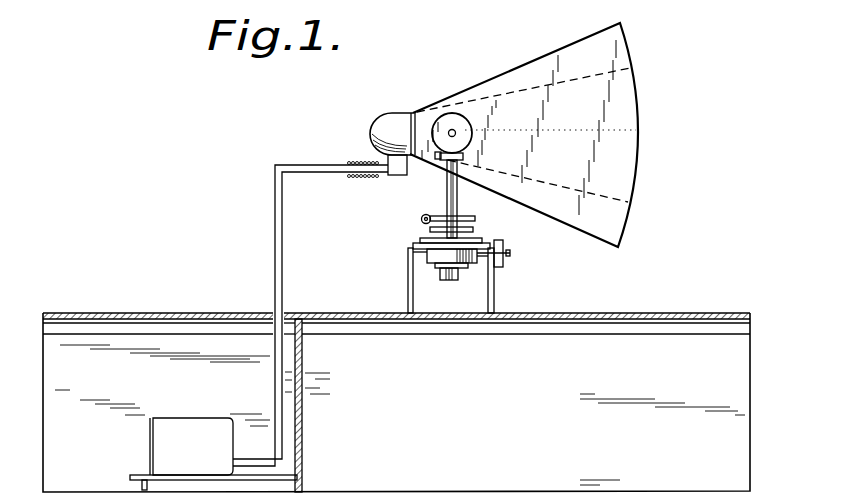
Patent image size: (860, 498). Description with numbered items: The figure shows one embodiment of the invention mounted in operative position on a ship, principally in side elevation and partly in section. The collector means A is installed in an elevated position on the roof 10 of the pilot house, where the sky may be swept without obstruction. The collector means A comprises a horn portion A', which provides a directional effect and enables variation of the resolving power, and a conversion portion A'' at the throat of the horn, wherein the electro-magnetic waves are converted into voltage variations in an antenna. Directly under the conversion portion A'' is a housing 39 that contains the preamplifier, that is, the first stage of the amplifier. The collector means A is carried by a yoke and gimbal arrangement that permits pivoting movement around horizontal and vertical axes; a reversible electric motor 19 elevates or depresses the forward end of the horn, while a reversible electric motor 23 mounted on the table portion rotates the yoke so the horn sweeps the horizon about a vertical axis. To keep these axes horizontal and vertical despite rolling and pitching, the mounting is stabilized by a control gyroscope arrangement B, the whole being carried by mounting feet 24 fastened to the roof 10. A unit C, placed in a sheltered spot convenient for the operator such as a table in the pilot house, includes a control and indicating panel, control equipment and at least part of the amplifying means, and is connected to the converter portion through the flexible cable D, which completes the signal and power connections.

The roof 10 is at (580, 314).
The electric motor 19 is at (438, 160).
The reversible electric motor 23 is at (421, 218).
The mounting feet 24 is at (495, 283).
The housing 39 is at (388, 158).
The collector means A is at (440, 113).
The horn portion A' is at (524, 132).
The conversion portion A'' is at (360, 129).
The control gyroscope arrangement B is at (432, 266).
The unit C is at (208, 418).
The flexible cable D is at (292, 163).